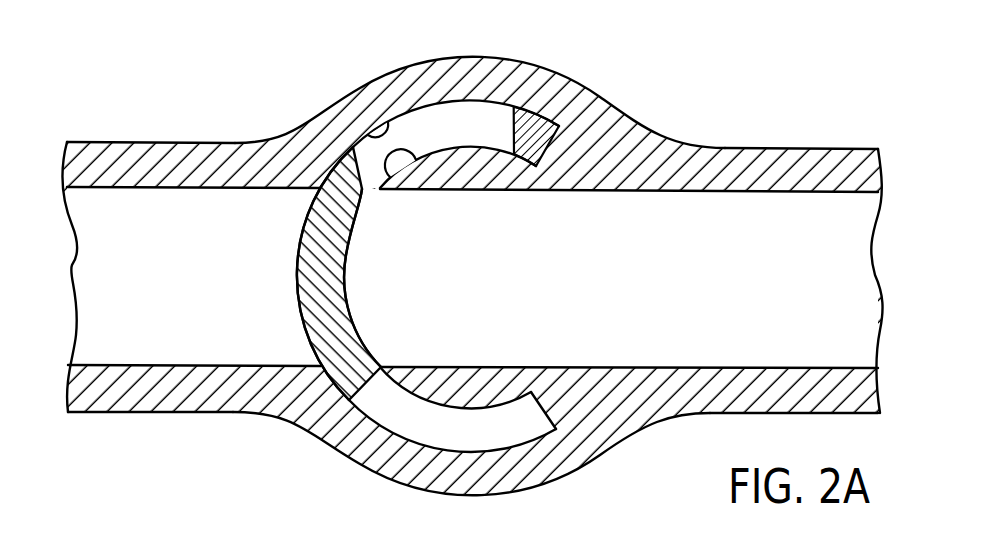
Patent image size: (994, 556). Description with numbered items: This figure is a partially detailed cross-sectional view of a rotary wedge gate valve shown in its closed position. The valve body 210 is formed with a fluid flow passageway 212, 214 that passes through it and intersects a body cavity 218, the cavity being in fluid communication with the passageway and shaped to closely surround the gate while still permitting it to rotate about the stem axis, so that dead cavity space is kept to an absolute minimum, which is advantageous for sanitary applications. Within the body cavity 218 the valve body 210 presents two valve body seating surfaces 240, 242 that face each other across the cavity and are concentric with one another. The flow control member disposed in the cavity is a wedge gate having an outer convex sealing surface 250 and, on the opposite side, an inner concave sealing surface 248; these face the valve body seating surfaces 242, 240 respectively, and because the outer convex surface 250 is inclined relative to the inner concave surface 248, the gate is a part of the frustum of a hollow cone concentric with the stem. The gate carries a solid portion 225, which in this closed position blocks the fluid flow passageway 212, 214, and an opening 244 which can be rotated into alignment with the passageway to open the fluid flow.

The valve body 210 is at (703, 136).
The fluid flow passageway 212 is at (851, 291).
The fluid flow passageway 214 is at (121, 288).
The body cavity 218 is at (417, 413).
The solid portion 225 is at (323, 301).
The valve body seating surface 240 is at (391, 160).
The valve body seating surface 242 is at (378, 117).
The opening 244 is at (462, 141).
The inner concave sealing surface 248 is at (346, 273).
The outer convex sealing surface 250 is at (298, 265).